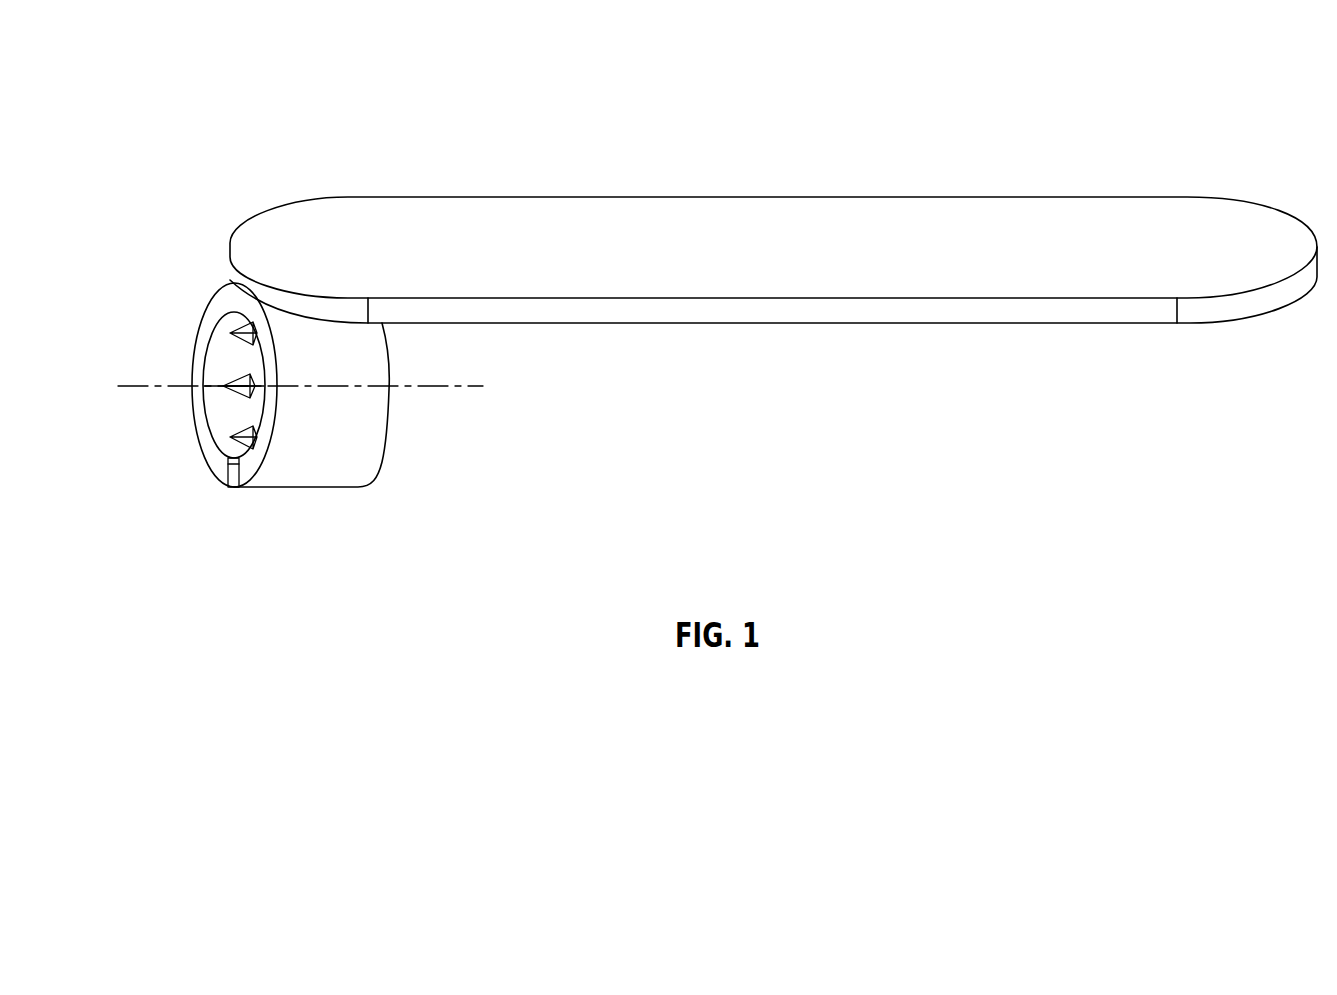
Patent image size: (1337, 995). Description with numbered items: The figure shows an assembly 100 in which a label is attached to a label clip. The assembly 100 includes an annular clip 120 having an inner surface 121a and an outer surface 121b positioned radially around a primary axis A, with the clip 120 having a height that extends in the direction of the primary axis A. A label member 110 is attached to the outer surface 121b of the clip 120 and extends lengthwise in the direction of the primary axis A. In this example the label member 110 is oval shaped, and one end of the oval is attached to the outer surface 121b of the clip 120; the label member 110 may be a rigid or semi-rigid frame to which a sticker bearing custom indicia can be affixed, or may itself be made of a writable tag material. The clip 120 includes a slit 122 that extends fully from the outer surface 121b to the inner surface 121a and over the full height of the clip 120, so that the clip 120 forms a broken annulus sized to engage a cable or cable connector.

The assembly 100 is at (273, 77).
The label member 110 is at (1243, 255).
The annular clip 120 is at (350, 438).
The inner surface 121a is at (214, 418).
The outer surface 121b is at (287, 470).
The slit 122 is at (233, 478).
The primary axis A is at (473, 386).